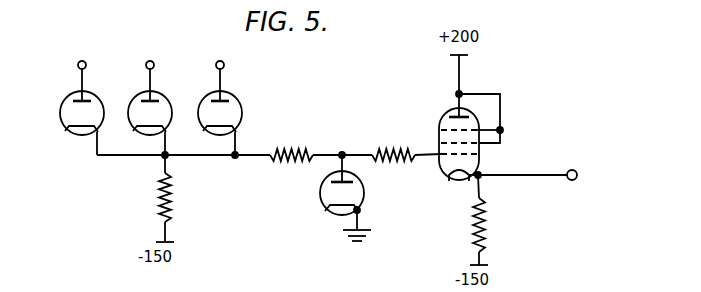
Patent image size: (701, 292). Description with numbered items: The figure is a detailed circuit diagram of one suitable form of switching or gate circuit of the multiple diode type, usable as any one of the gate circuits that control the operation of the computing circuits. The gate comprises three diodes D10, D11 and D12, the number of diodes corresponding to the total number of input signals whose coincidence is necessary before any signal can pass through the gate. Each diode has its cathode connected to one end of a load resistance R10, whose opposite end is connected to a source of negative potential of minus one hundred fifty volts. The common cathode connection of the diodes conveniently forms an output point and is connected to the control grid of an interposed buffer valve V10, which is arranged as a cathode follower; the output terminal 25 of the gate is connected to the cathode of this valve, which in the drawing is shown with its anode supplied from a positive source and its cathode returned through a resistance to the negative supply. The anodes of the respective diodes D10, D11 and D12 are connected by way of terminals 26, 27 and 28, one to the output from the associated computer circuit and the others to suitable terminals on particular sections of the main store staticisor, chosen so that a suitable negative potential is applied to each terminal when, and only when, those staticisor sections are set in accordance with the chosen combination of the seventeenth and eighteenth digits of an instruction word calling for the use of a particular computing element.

The output terminal 25 is at (583, 162).
The terminal 26 is at (89, 91).
The terminal 27 is at (158, 91).
The terminal 28 is at (228, 91).
The diode D10 is at (90, 112).
The diode D11 is at (173, 90).
The diode D12 is at (243, 90).
The load resistance R10 is at (180, 198).
The buffer valve V10 is at (446, 113).